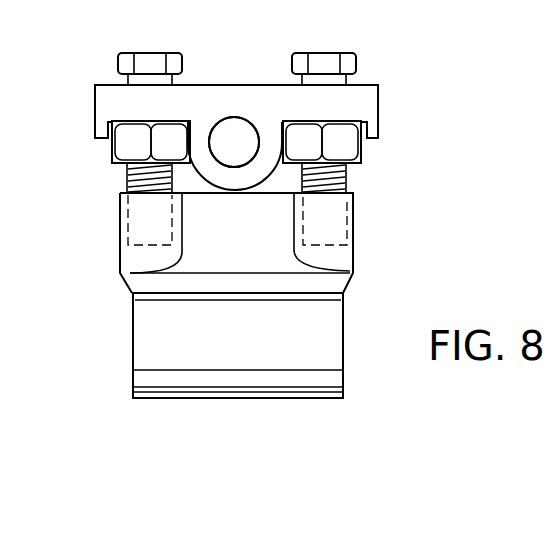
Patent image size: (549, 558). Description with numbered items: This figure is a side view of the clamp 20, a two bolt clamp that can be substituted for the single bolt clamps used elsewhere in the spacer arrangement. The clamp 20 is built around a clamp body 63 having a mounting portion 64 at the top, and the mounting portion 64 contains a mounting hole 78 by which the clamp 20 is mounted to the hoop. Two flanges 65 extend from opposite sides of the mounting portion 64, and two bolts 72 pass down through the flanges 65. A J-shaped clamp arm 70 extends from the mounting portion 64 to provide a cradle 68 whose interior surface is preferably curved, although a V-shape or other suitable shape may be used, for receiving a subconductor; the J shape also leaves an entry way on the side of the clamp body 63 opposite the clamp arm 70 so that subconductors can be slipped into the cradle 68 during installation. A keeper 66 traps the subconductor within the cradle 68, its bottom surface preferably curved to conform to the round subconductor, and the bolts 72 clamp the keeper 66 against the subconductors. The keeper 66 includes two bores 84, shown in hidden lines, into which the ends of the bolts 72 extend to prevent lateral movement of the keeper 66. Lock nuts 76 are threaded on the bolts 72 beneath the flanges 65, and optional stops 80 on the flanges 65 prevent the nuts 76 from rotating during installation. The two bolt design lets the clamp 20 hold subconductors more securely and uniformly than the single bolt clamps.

The clamp 20 is at (452, 65).
The clamp body 63 is at (312, 380).
The mounting portion 64 is at (228, 102).
The flanges 65 is at (120, 106).
The keeper 66 is at (343, 258).
The cradle 68 is at (188, 398).
The J-shaped clamp arm 70 is at (271, 178).
The bolts 72 is at (117, 61).
The lock nuts 76 is at (122, 148).
The mounting hole 78 is at (230, 151).
The stops 80 is at (95, 128).
The bores 84 is at (128, 241).